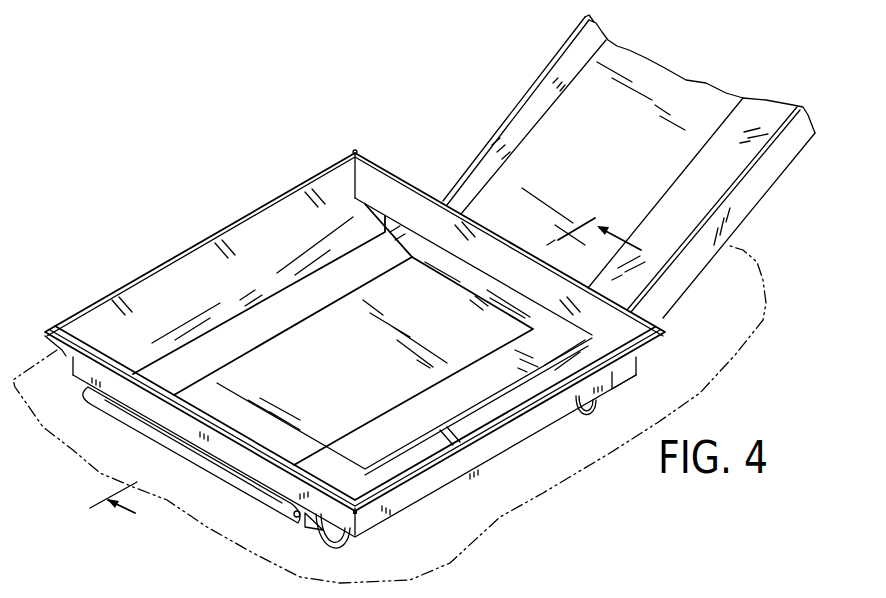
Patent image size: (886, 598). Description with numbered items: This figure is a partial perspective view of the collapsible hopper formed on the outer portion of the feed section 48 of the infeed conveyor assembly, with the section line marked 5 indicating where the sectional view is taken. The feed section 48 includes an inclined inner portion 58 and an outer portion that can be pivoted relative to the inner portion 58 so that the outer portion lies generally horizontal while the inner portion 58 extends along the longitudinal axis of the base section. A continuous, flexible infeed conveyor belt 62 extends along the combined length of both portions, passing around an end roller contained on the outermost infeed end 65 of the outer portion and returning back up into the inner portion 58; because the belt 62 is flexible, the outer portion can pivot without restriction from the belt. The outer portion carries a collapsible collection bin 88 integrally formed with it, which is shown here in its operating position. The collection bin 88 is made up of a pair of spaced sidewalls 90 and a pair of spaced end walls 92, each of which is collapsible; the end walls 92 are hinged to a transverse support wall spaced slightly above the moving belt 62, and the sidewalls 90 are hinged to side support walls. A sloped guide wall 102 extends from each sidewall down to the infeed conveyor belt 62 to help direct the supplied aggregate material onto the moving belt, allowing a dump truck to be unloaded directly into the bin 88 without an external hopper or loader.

The feed section 48 is at (448, 108).
The inner portion 58 is at (745, 117).
The infeed conveyor belt 62 is at (666, 83).
The infeed end 65 is at (258, 500).
The collapsible collection bin 88 is at (276, 155).
The sidewalls 90 is at (137, 283).
The end walls 92 is at (402, 186).
The sloped guide wall 102 is at (238, 290).
The section line 5 is at (375, 374).